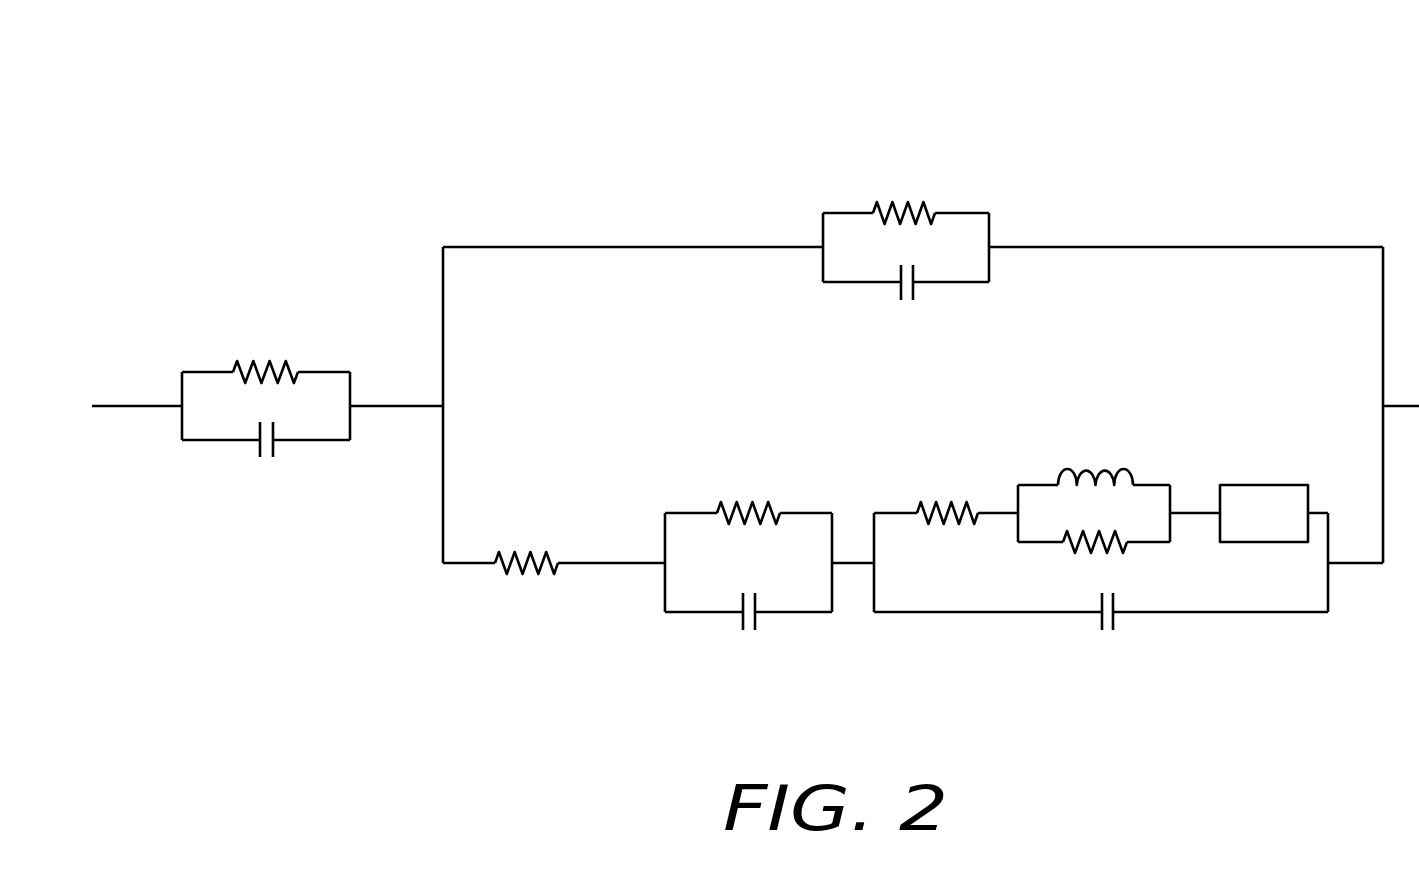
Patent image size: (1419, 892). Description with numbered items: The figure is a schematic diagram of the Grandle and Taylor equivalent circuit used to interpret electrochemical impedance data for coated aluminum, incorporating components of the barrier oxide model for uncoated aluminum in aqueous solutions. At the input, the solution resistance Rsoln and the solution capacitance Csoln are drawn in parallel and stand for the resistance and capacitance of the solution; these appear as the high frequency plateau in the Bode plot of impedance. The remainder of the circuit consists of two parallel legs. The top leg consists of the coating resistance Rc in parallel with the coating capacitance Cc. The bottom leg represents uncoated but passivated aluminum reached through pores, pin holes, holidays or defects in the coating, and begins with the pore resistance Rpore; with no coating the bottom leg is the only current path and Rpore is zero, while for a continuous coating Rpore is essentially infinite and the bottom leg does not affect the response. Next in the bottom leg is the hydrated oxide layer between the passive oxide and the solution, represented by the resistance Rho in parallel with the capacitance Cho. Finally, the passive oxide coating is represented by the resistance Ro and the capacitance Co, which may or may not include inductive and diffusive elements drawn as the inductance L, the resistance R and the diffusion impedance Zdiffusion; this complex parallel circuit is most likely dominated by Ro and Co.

The solution resistance Rsoln is at (269, 352).
The solution capacitance Csoln is at (272, 457).
The coating resistance Rc is at (904, 193).
The coating capacitance Cc is at (907, 300).
The pore resistance Rpore is at (528, 583).
The hydrated oxide layer resistance Rho is at (748, 493).
The hydrated oxide layer capacitance Cho is at (753, 629).
The passive oxide resistance Ro is at (947, 493).
The inductive element L is at (1095, 458).
The resistance R is at (1095, 557).
The diffusion impedance Zdiffusion is at (1267, 493).
The passive oxide capacitance Co is at (1108, 629).